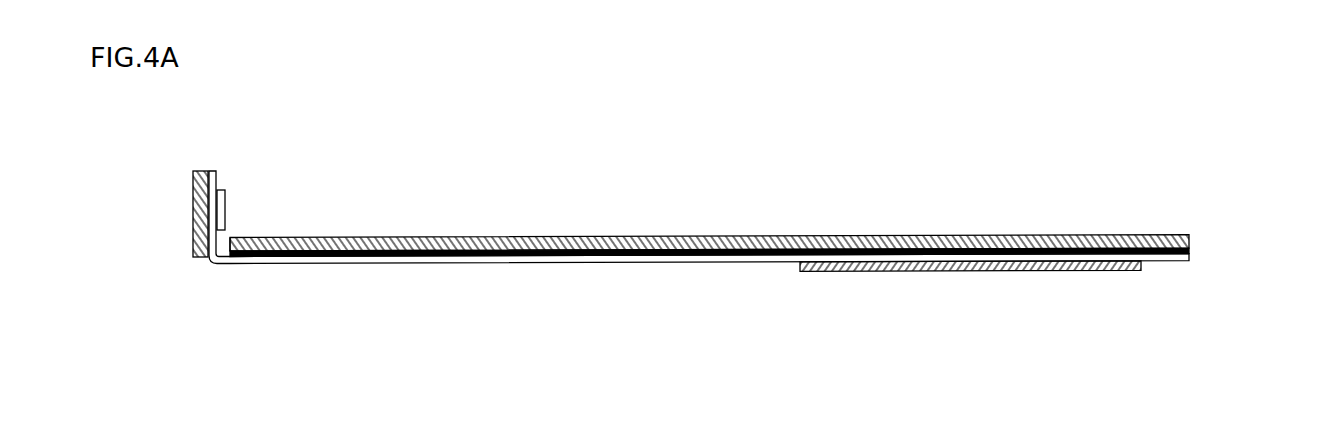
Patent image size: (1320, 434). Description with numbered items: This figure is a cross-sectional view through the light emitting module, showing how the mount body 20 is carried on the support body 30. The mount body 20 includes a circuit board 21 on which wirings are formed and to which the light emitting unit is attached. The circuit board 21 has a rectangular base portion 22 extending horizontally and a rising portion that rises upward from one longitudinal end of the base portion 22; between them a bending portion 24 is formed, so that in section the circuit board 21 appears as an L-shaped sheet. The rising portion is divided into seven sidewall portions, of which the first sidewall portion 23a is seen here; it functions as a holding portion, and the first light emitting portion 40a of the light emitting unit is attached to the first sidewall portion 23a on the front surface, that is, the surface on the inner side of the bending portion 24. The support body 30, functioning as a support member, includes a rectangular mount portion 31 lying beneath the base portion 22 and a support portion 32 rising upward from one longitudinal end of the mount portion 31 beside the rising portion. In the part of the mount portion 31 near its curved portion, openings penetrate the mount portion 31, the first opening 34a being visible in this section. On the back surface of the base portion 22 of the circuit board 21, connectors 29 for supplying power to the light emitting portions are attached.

The mount body 20 is at (708, 229).
The circuit board 21 is at (413, 265).
The base portion 22 is at (727, 259).
The first sidewall portion 23a is at (214, 171).
The bending portion 24 is at (210, 265).
The connectors 29 is at (975, 274).
The support body 30 is at (746, 209).
The mount portion 31 is at (584, 246).
The support portion 32 is at (193, 203).
The first opening 34a is at (228, 246).
The first light emitting portion 40a is at (222, 206).